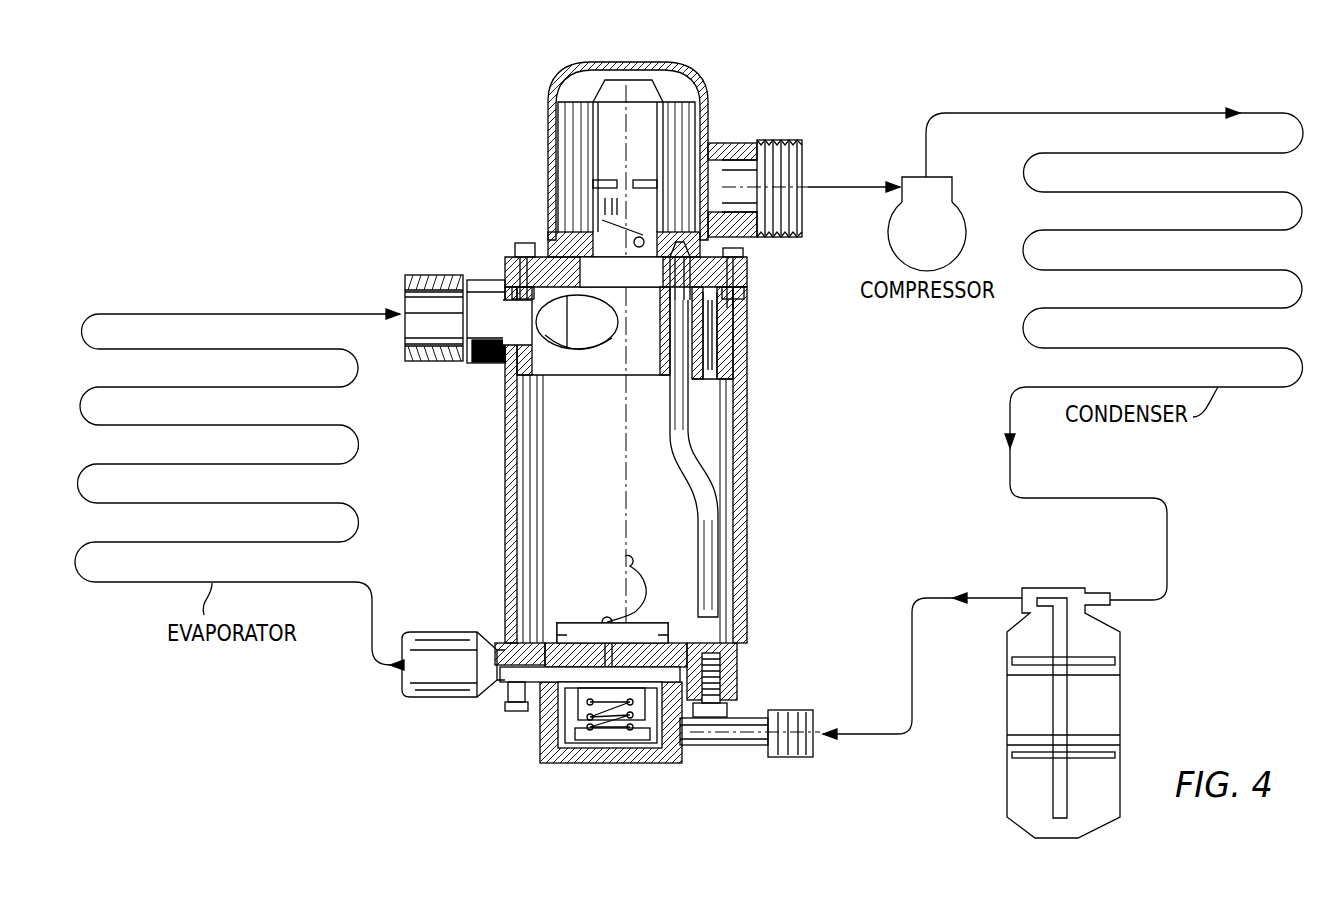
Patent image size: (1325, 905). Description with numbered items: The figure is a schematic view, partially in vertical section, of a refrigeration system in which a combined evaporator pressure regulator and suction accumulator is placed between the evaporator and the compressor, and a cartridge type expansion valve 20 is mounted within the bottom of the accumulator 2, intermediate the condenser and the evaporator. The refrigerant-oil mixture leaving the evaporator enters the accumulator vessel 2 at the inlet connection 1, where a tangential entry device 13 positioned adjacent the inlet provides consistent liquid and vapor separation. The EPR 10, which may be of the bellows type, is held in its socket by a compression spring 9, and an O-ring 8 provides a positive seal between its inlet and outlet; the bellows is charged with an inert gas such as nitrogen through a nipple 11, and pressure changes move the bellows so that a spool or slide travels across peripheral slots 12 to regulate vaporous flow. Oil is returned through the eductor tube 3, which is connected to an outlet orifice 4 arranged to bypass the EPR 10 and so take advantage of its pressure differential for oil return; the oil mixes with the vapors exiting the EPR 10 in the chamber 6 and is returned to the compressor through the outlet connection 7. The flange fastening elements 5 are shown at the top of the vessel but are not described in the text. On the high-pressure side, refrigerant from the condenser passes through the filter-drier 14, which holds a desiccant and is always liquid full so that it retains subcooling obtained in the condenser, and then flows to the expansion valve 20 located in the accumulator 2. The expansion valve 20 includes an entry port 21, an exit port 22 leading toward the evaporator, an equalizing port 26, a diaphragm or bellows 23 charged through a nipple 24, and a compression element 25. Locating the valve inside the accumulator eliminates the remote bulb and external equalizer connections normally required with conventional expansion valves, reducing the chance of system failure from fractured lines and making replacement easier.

The inlet connection 1 is at (417, 273).
The accumulator vessel 2 is at (505, 482).
The eductor tube 3 is at (670, 443).
The outlet orifice 4 is at (700, 238).
The nut 5 is at (745, 276).
The chamber 6 is at (572, 80).
The outlet connection 7 is at (762, 140).
The O-ring 8 is at (550, 218).
The compression spring 9 is at (560, 257).
The EPR 10 is at (593, 128).
The nipple 11 is at (637, 238).
The peripheral slots 12 is at (593, 183).
The tangential entry device 13 is at (594, 333).
The filter-drier 14 is at (1122, 707).
The cartridge type expansion valve 20 is at (590, 765).
The entry port 21 is at (805, 713).
The exit port 22 is at (445, 693).
The diaphragm or bellows 23 is at (657, 625).
The nipple 24 is at (647, 582).
The compression element 25 is at (637, 765).
The equalizing port 26 is at (557, 645).